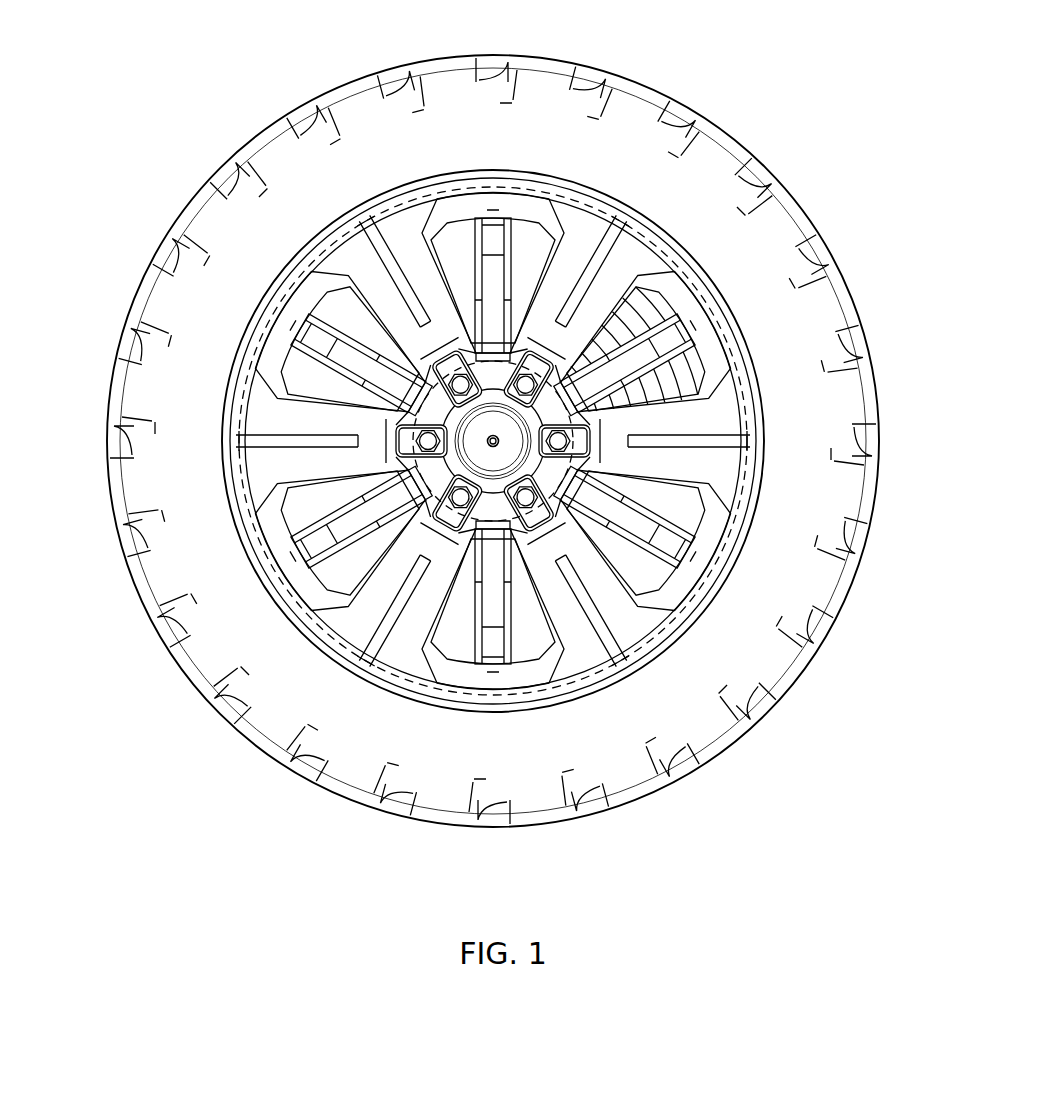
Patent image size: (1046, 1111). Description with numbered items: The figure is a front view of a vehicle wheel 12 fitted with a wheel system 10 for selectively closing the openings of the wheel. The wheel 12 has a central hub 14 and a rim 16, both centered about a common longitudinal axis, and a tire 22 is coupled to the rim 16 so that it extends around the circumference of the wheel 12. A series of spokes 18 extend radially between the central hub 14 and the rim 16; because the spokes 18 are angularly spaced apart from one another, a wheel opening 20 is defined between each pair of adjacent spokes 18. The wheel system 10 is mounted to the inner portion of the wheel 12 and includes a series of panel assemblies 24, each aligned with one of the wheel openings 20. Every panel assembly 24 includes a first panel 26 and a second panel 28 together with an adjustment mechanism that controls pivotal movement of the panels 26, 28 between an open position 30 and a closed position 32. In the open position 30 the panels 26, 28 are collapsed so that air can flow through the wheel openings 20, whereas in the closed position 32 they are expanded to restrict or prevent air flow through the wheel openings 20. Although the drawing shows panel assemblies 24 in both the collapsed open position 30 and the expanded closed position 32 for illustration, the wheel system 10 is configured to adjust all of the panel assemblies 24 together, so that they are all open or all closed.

The wheel system 10 is at (598, 210).
The wheel 12 is at (236, 352).
The central hub 14 is at (400, 443).
The rim 16 is at (235, 532).
The spokes 18 is at (368, 267).
The wheel opening 20 is at (537, 620).
The tire 22 is at (210, 222).
The panel assembly 24 is at (470, 252).
The first panel 26 is at (475, 220).
The second panel 28 is at (522, 217).
The open position 30 is at (546, 224).
The closed position 32 is at (708, 347).